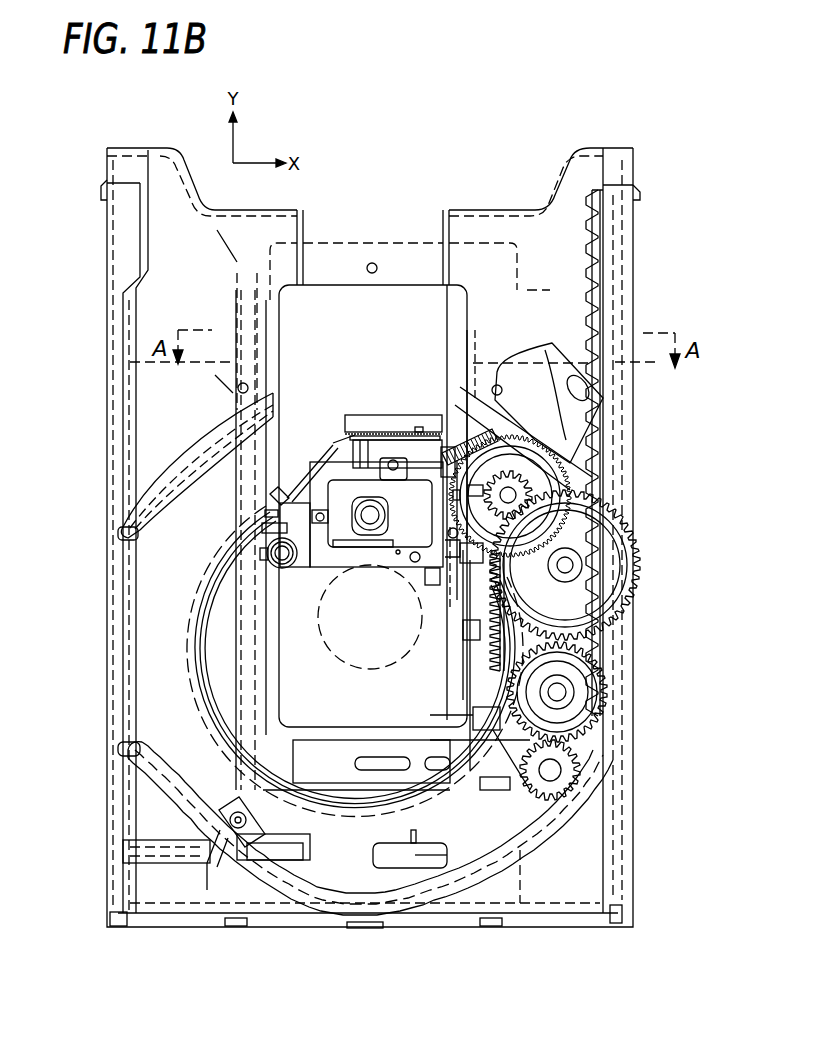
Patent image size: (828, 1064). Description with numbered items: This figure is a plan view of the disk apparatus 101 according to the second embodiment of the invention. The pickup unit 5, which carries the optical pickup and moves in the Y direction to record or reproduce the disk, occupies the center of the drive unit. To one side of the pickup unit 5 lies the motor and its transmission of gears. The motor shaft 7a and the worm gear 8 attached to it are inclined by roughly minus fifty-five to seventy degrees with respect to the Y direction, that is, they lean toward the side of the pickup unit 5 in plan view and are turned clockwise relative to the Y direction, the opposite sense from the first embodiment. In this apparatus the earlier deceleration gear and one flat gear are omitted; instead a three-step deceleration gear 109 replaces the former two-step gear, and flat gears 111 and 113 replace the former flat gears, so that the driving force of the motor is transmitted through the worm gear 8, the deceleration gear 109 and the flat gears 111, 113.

The disk apparatus 101 is at (652, 138).
The pickup unit 5 is at (362, 415).
The motor shaft 7a is at (473, 443).
The worm gear 8 is at (462, 450).
The deceleration gear 109 is at (587, 463).
The flat gear 111 is at (567, 543).
The flat gear 113 is at (590, 647).